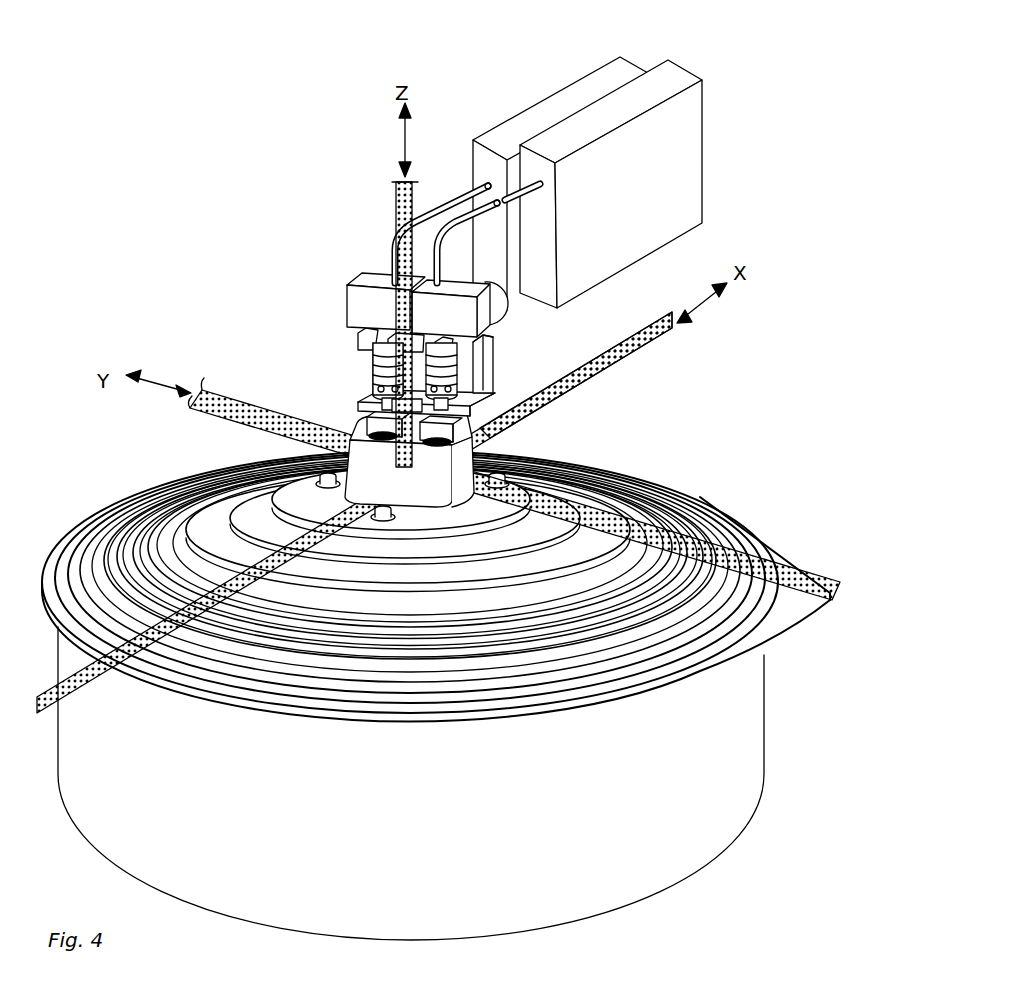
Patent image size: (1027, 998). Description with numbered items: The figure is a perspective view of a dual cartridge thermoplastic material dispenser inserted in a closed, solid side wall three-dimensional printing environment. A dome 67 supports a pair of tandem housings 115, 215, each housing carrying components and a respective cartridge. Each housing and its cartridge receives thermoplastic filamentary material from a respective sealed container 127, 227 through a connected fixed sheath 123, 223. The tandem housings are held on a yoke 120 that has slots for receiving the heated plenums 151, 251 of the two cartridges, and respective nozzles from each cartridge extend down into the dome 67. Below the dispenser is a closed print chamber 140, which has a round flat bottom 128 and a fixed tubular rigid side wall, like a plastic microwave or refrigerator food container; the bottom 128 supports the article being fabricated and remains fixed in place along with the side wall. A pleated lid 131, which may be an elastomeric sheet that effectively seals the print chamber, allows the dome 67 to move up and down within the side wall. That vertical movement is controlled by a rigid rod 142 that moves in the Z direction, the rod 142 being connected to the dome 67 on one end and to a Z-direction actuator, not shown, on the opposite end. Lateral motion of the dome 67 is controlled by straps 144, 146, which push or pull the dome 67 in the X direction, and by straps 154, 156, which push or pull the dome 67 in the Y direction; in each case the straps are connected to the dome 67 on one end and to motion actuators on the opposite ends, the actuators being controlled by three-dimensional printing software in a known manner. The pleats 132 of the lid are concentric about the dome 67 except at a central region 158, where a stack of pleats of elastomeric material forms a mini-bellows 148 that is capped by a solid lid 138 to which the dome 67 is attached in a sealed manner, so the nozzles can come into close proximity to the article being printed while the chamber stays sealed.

The dome 67 is at (470, 468).
The housing 115 is at (482, 318).
The yoke 120 is at (485, 368).
The fixed sheath 123 is at (484, 218).
The sealed container 127 is at (697, 135).
The round flat bottom 128 is at (407, 940).
The pleated lid 131 is at (626, 470).
The pleats 132 is at (670, 530).
The solid lid 138 is at (545, 545).
The closed print chamber 140 is at (788, 704).
The rigid rod 142 is at (400, 212).
The strap 144 is at (92, 683).
The strap 146 is at (637, 350).
The mini-bellows 148 is at (377, 573).
The heated plenum 151 is at (490, 385).
The strap 154 is at (697, 550).
The strap 156 is at (268, 410).
The central region 158 is at (480, 603).
The housing 215 is at (362, 282).
The fixed sheath 223 is at (432, 212).
The sealed container 227 is at (612, 70).
The heated plenum 251 is at (375, 365).